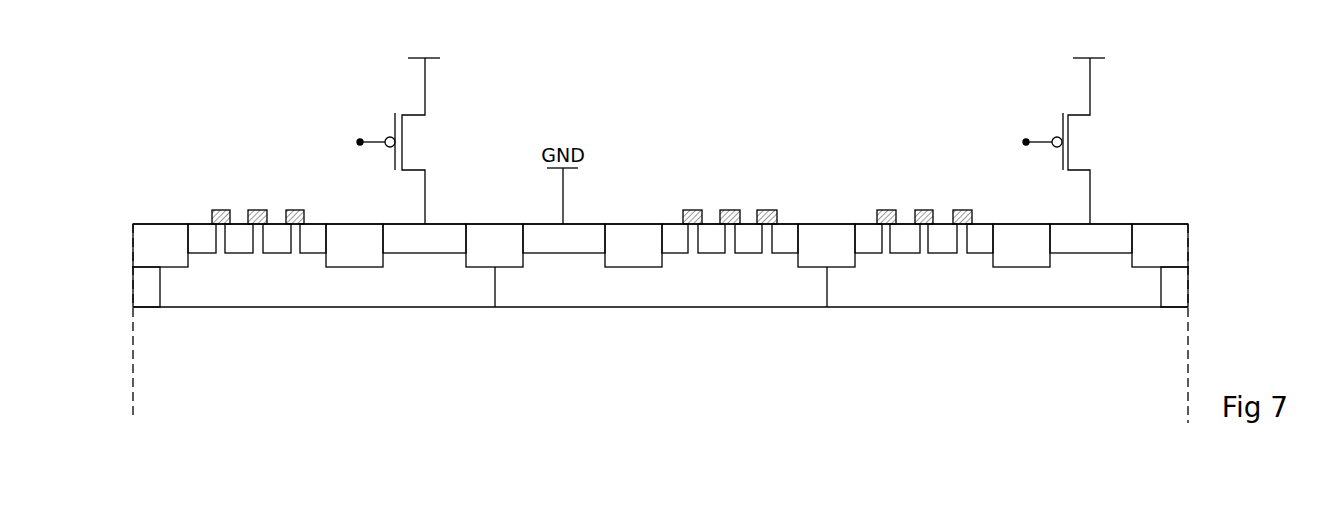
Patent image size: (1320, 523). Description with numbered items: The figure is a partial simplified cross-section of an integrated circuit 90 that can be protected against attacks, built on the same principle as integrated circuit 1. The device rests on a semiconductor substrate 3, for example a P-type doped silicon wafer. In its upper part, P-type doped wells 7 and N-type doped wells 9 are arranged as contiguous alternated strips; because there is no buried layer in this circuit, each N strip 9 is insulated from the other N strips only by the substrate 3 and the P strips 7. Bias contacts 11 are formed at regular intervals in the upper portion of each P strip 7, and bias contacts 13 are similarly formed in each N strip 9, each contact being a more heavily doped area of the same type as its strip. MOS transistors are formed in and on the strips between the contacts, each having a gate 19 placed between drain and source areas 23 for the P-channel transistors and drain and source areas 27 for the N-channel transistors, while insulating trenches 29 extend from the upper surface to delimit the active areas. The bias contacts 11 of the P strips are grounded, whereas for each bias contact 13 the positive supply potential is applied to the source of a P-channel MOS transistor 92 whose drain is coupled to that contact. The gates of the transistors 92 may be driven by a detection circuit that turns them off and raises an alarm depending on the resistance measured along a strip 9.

The integrated circuit 90 is at (166, 77).
The integrated circuit 1 is at (134, 185).
The semiconductor substrate 3 is at (155, 352).
The P-type doped well 7 is at (135, 283).
The N-type doped well 9 is at (295, 300).
The bias contact 11 is at (545, 242).
The bias contact 13 is at (405, 240).
The gate 19 is at (296, 210).
The drain and source areas 23 is at (790, 228).
The drain and source areas 27 is at (237, 228).
The insulating trench 29 is at (160, 224).
The P-channel MOS transistor 92 is at (405, 147).